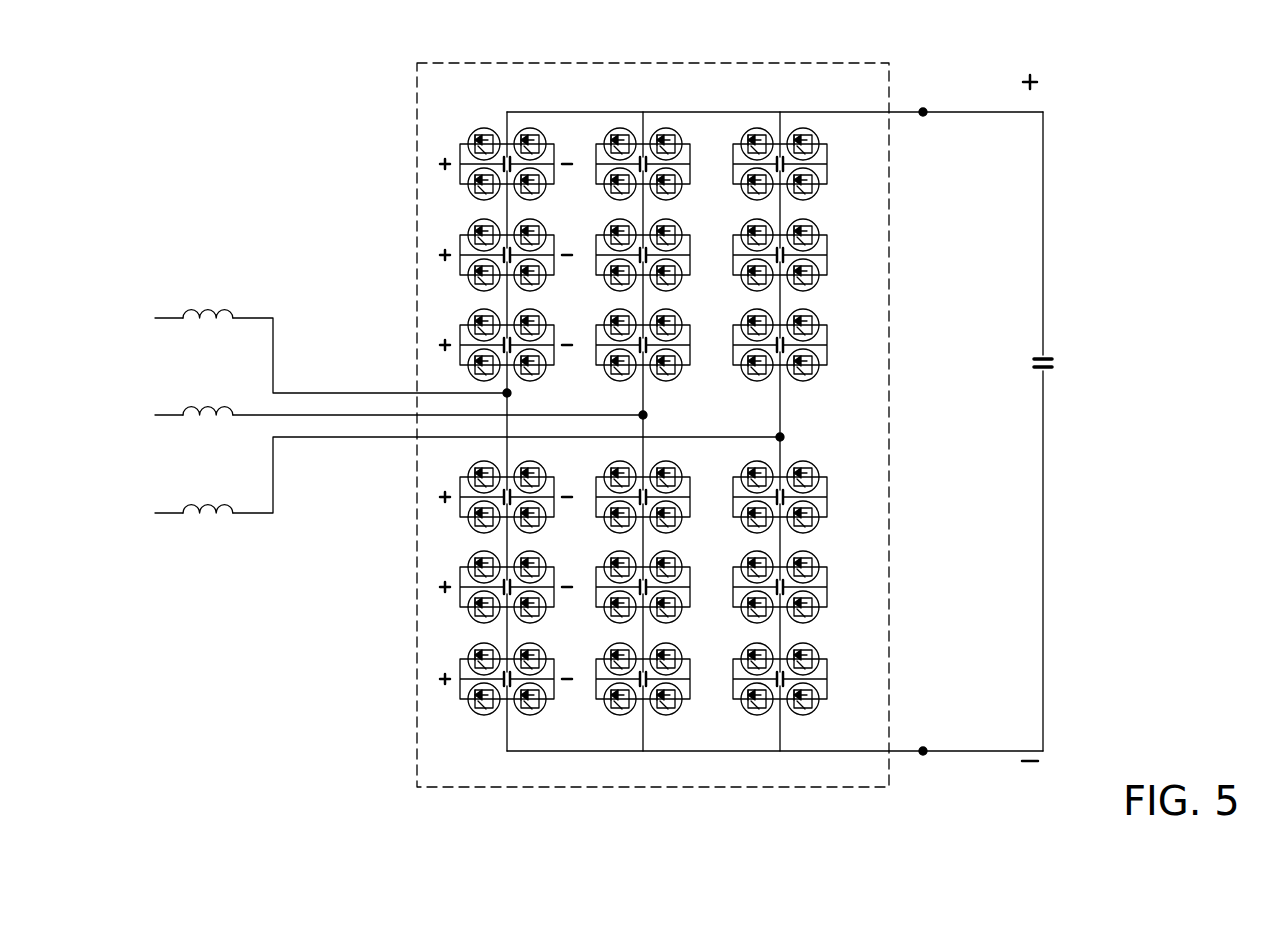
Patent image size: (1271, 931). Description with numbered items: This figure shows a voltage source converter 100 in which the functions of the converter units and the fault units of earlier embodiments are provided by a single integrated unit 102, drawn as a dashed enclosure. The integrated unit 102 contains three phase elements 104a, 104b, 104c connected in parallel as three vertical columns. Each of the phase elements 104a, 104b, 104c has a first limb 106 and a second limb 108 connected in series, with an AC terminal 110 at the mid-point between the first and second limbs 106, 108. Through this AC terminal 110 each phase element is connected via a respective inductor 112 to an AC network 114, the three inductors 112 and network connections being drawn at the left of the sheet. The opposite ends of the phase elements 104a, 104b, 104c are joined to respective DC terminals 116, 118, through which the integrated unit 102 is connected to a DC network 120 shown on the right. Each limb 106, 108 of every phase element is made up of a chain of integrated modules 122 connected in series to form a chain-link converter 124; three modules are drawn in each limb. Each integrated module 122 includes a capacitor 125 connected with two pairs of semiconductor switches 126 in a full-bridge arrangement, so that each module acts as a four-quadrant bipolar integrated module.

The voltage source converter 100 is at (226, 148).
The integrated unit 102 is at (692, 62).
The phase element 104a is at (507, 118).
The phase element 104b is at (622, 416).
The phase element 104c is at (782, 416).
The first limb 106 is at (787, 404).
The second limb 108 is at (787, 450).
The AC terminal 110 is at (778, 434).
The inductor 112 is at (192, 311).
The AC network 114 is at (166, 319).
The DC terminal 116 is at (925, 754).
The DC terminal 118 is at (926, 110).
The DC network 120 is at (1043, 112).
The integrated module 122 is at (829, 178).
The chain-link converter 124 is at (730, 555).
The capacitor 125 is at (600, 371).
The semiconductor switch 126 is at (598, 242).